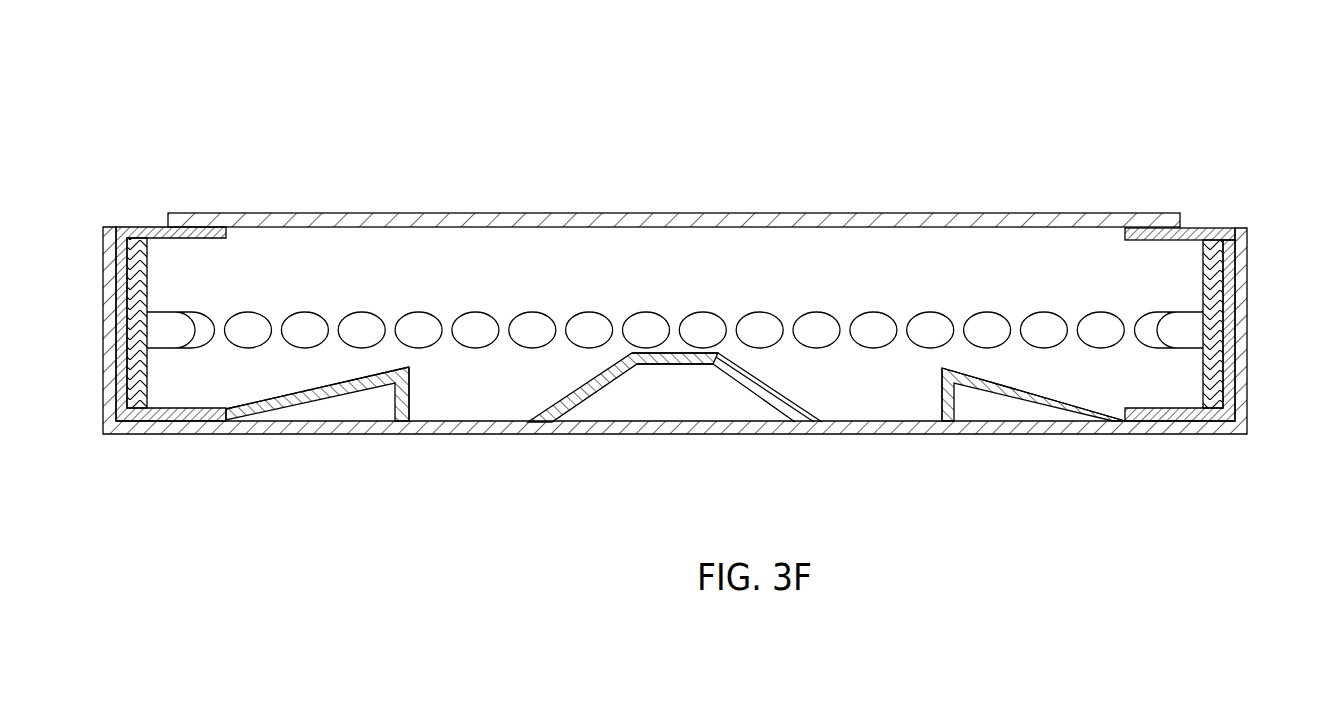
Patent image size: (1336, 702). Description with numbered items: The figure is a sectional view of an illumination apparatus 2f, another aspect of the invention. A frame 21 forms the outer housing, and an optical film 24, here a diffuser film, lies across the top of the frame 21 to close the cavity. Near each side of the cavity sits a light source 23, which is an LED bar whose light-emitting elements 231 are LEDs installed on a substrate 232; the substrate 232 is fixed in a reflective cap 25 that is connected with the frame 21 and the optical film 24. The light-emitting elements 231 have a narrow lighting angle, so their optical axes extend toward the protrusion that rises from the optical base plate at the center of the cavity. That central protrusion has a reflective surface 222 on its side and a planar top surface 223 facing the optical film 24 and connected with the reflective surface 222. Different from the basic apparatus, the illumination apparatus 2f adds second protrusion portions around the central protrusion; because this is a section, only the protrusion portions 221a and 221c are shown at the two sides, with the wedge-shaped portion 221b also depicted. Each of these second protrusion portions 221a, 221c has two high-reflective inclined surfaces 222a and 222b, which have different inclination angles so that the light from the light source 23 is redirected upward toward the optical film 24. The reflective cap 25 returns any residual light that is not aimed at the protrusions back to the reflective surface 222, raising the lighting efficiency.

The illumination apparatus 2f is at (216, 115).
The frame 21 is at (1243, 253).
The light source 23 is at (726, 324).
The light-emitting element 231 is at (303, 316).
The substrate 232 is at (1222, 350).
The optical film 24 is at (1090, 215).
The reflective cap 25 is at (1210, 232).
The second protrusion portion 221a is at (676, 373).
The second protrusion portion 221b is at (351, 393).
The second protrusion portion 221c is at (987, 391).
The reflective surface 222 is at (760, 378).
The inclined surface 222a is at (412, 397).
The inclined surface 222b is at (335, 385).
The top surface 223 is at (668, 352).